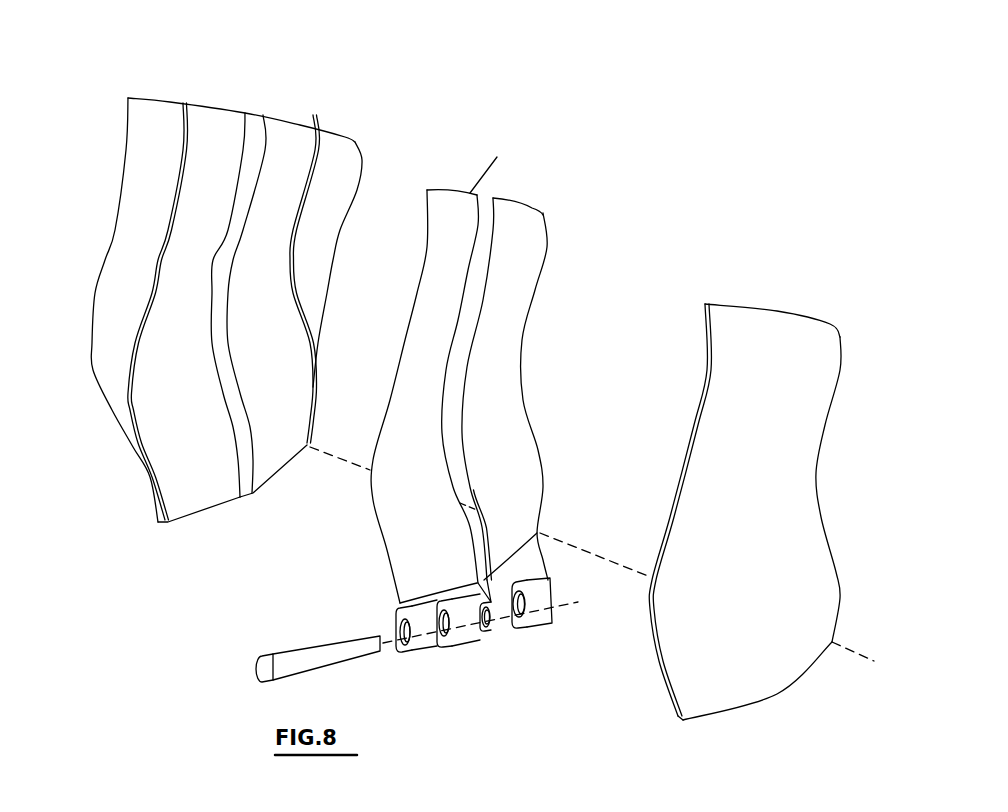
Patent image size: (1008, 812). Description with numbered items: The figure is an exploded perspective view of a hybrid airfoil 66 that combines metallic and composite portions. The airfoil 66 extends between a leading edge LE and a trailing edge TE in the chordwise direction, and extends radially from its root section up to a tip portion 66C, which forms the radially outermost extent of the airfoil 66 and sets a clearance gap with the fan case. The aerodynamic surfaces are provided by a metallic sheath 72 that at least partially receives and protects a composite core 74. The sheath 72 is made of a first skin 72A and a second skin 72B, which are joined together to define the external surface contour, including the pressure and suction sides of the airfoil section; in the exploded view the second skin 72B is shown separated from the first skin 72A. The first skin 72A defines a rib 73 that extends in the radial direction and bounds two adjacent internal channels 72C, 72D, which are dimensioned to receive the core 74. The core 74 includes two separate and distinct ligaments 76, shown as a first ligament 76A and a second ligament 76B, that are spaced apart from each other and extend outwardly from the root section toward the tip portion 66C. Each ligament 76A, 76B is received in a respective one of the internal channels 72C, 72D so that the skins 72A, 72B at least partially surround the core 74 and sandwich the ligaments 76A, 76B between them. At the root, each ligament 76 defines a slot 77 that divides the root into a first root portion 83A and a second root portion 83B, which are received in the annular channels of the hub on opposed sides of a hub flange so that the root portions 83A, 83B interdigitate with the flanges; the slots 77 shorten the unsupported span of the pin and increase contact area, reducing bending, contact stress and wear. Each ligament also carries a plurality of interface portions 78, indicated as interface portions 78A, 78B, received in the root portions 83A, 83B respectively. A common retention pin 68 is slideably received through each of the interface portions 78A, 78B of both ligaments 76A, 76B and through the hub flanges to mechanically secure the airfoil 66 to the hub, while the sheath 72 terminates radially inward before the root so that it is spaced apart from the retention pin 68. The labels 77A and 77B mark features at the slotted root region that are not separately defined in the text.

The airfoil 66 is at (112, 58).
The tip portion 66C is at (122, 104).
The metallic sheath 72 is at (149, 272).
The first skin 72A is at (170, 98).
The second skin 72B is at (793, 314).
The internal channel 72C is at (217, 123).
The internal channel 72D is at (302, 127).
The rib 73 is at (248, 125).
The composite core 74 is at (562, 133).
The ligament 76 is at (502, 195).
The first ligament 76A is at (440, 190).
The second ligament 76B is at (530, 207).
The slot 77 is at (437, 642).
The first lug hole 77A is at (517, 597).
The second lug hole 77B is at (535, 615).
The interface portion 78 is at (403, 610).
The interface portion 78A is at (400, 645).
The interface portion 78B is at (443, 643).
The first root portion 83A is at (497, 640).
The second root portion 83B is at (542, 628).
The retention pin 68 is at (285, 648).
The leading edge LE is at (116, 232).
The trailing edge TE is at (362, 157).